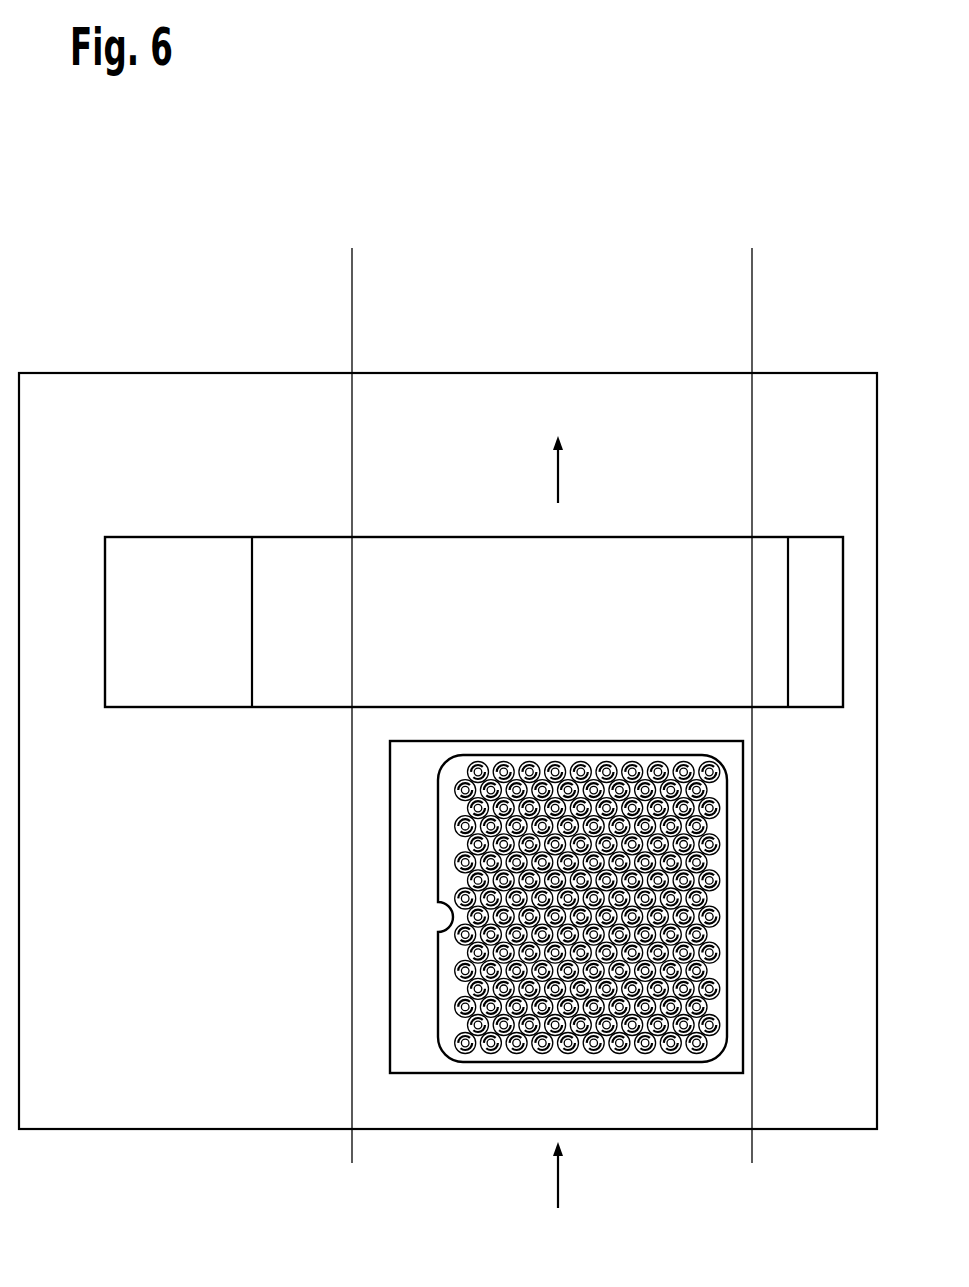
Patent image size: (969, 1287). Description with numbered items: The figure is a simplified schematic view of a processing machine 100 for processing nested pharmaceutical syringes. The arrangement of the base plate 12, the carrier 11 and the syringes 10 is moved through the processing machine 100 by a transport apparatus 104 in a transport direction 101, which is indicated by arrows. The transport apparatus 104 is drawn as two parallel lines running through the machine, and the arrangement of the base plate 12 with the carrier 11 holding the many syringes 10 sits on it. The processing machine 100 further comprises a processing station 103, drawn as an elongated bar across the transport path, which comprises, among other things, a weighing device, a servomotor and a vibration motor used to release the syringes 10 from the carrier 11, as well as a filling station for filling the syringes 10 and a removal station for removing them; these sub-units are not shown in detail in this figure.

The processing machine 100 is at (165, 196).
The transport apparatus 104 is at (740, 333).
The processing station 103 is at (266, 500).
The transport direction 101 is at (558, 478).
The base plate 12 is at (745, 893).
The syringe 10 is at (732, 952).
The carrier 11 is at (720, 834).